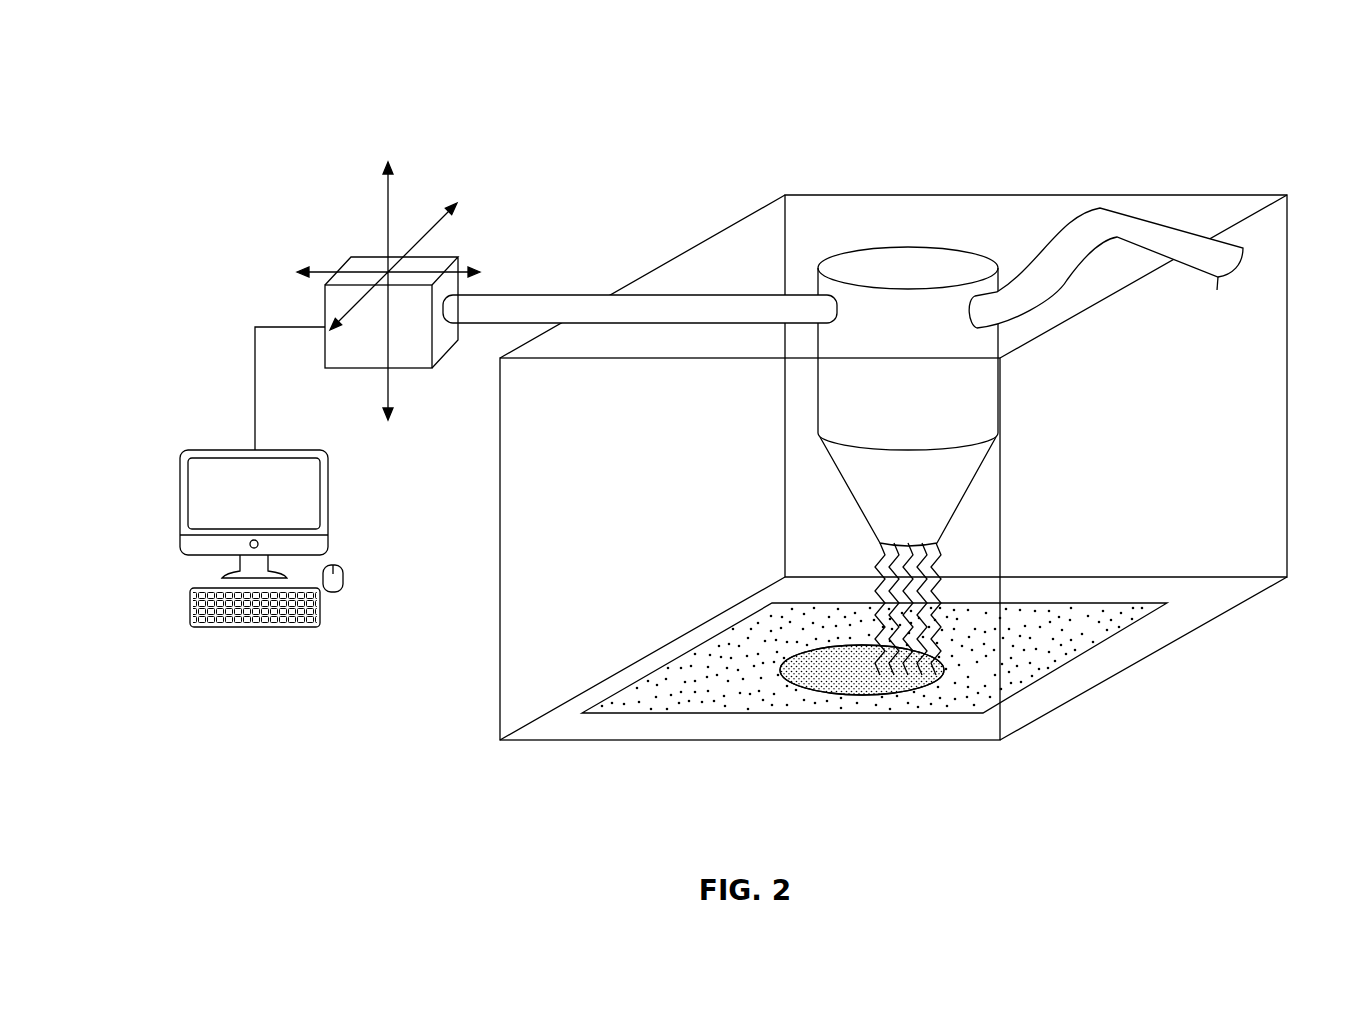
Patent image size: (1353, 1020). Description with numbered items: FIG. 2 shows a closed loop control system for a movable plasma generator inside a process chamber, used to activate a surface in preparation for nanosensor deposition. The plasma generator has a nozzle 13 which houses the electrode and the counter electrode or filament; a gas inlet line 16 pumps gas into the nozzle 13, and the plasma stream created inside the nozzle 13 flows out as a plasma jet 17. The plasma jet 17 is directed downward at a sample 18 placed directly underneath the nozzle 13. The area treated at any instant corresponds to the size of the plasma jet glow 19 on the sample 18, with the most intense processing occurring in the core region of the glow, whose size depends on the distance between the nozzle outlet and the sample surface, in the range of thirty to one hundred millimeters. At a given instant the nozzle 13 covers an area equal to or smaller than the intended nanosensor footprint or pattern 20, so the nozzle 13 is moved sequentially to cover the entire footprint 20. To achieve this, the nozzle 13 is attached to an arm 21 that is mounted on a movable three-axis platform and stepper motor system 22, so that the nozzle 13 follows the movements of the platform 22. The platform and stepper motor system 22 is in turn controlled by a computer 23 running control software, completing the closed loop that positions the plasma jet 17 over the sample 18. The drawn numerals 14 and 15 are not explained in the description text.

The nozzle 13 is at (960, 260).
The build material powder 14 is at (900, 260).
The build chamber 15 is at (847, 490).
The gas inlet line 16 is at (1156, 220).
The plasma jet 17 is at (925, 625).
The sample 18 is at (1083, 623).
The plasma jet glow 19 is at (945, 680).
The nanosensor footprint/pattern 20 is at (837, 677).
The arm 21 is at (565, 295).
The 3-axis platform and stepper motor system 22 is at (352, 257).
The computer 23 is at (238, 669).